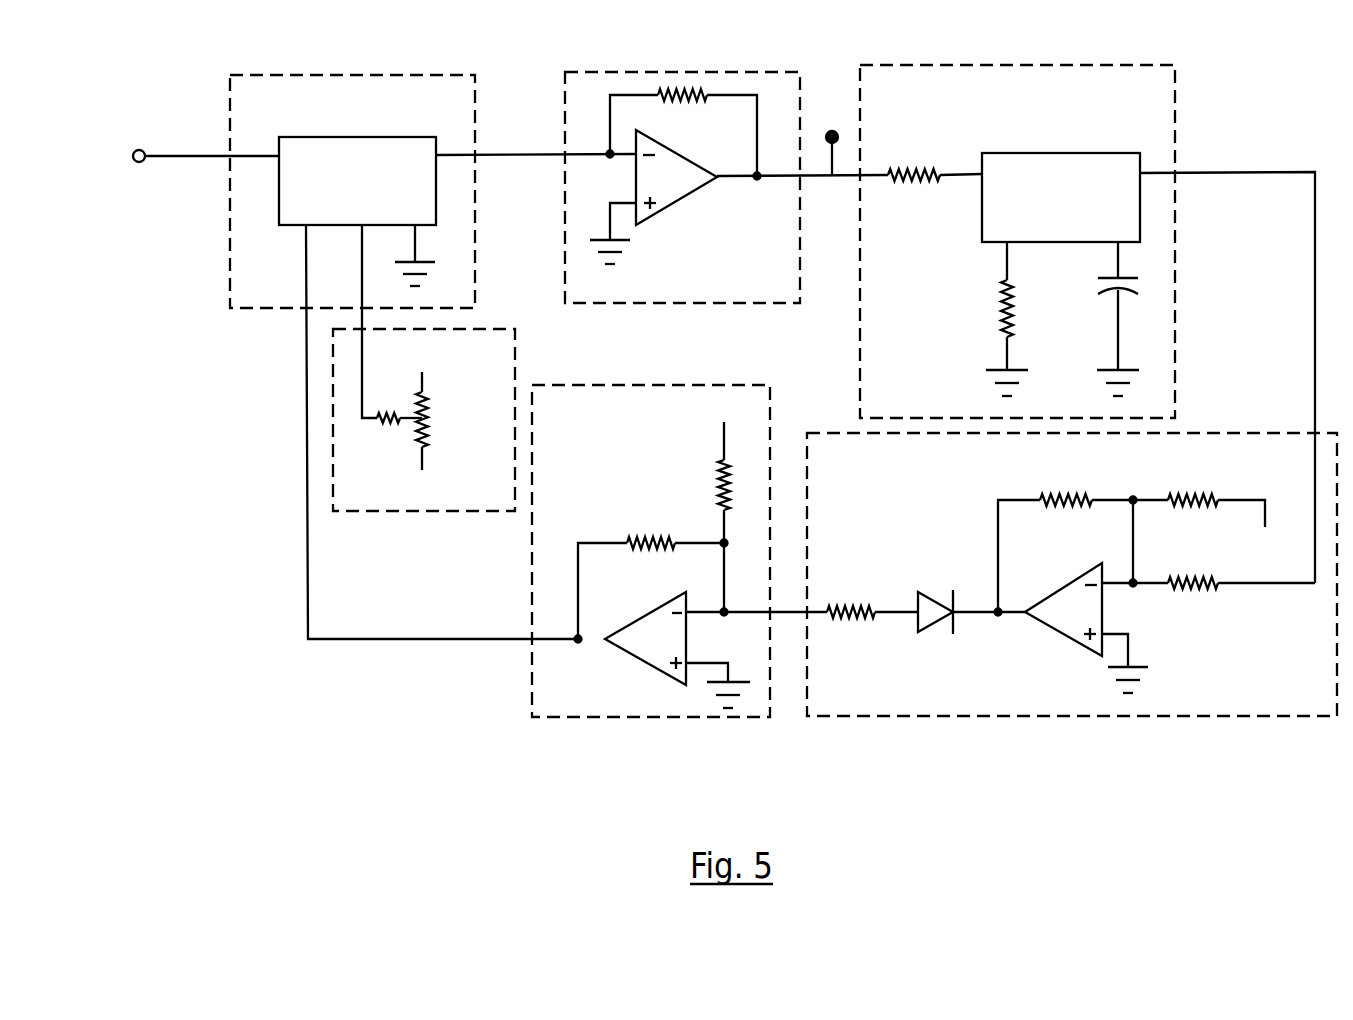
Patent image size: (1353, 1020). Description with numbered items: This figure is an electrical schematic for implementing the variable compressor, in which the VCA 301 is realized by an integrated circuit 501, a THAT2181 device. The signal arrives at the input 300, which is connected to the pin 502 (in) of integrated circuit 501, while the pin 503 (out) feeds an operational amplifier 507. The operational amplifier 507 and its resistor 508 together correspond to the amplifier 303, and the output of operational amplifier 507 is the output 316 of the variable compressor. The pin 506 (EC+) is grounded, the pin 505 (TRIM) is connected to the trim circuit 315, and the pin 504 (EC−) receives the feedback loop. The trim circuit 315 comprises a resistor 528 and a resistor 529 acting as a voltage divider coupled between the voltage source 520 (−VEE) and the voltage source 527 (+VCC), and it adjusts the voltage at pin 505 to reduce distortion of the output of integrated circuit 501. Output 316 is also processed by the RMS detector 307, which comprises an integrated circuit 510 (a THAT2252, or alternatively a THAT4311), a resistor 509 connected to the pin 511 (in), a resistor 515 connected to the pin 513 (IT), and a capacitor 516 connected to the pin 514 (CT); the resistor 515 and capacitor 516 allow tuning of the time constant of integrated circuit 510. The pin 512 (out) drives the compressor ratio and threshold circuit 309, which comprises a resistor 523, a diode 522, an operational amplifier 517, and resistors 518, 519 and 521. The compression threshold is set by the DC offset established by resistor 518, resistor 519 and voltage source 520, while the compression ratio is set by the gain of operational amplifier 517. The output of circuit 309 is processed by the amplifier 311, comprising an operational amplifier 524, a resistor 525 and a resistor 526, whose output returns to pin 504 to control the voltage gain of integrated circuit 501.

The input 300 is at (139, 149).
The voltage controlled amplifier 301 is at (259, 311).
The amplifier 303 is at (593, 307).
The RMS detector 307 is at (1178, 92).
The compressor ratio and threshold circuit 309 is at (927, 719).
The amplifier 311 is at (652, 719).
The trim circuit 315 is at (360, 513).
The output 316 is at (832, 131).
The integrated circuit 501 is at (356, 137).
The pin (in) 502 is at (292, 143).
The pin (out) 503 is at (421, 145).
The pin (EC−) 504 is at (296, 228).
The pin (TRIM) 505 is at (357, 228).
The pin (EC+) 506 is at (393, 208).
The operational amplifier 507 is at (676, 196).
The resistor 508 is at (683, 92).
The resistor 509 is at (914, 166).
The integrated circuit 510 is at (1074, 152).
The pin (in) 511 is at (994, 154).
The pin (out) 512 is at (1117, 154).
The pin (IT) 513 is at (993, 243).
The pin (CT) 514 is at (1106, 243).
The resistor 515 is at (1000, 312).
The capacitor 516 is at (1140, 292).
The operational amplifier 517 is at (1058, 578).
The resistor 518 is at (1063, 494).
The resistor 519 is at (1190, 494).
The voltage source (−VEE) 520 is at (440, 497).
The resistor 521 is at (1197, 590).
The diode 522 is at (914, 590).
The resistor 523 is at (855, 616).
The operational amplifier 524 is at (641, 615).
The resistor 525 is at (647, 540).
The resistor 526 is at (718, 490).
The voltage source (+VCC) 527 is at (445, 358).
The resistor 528 is at (428, 418).
The resistor 529 is at (392, 425).